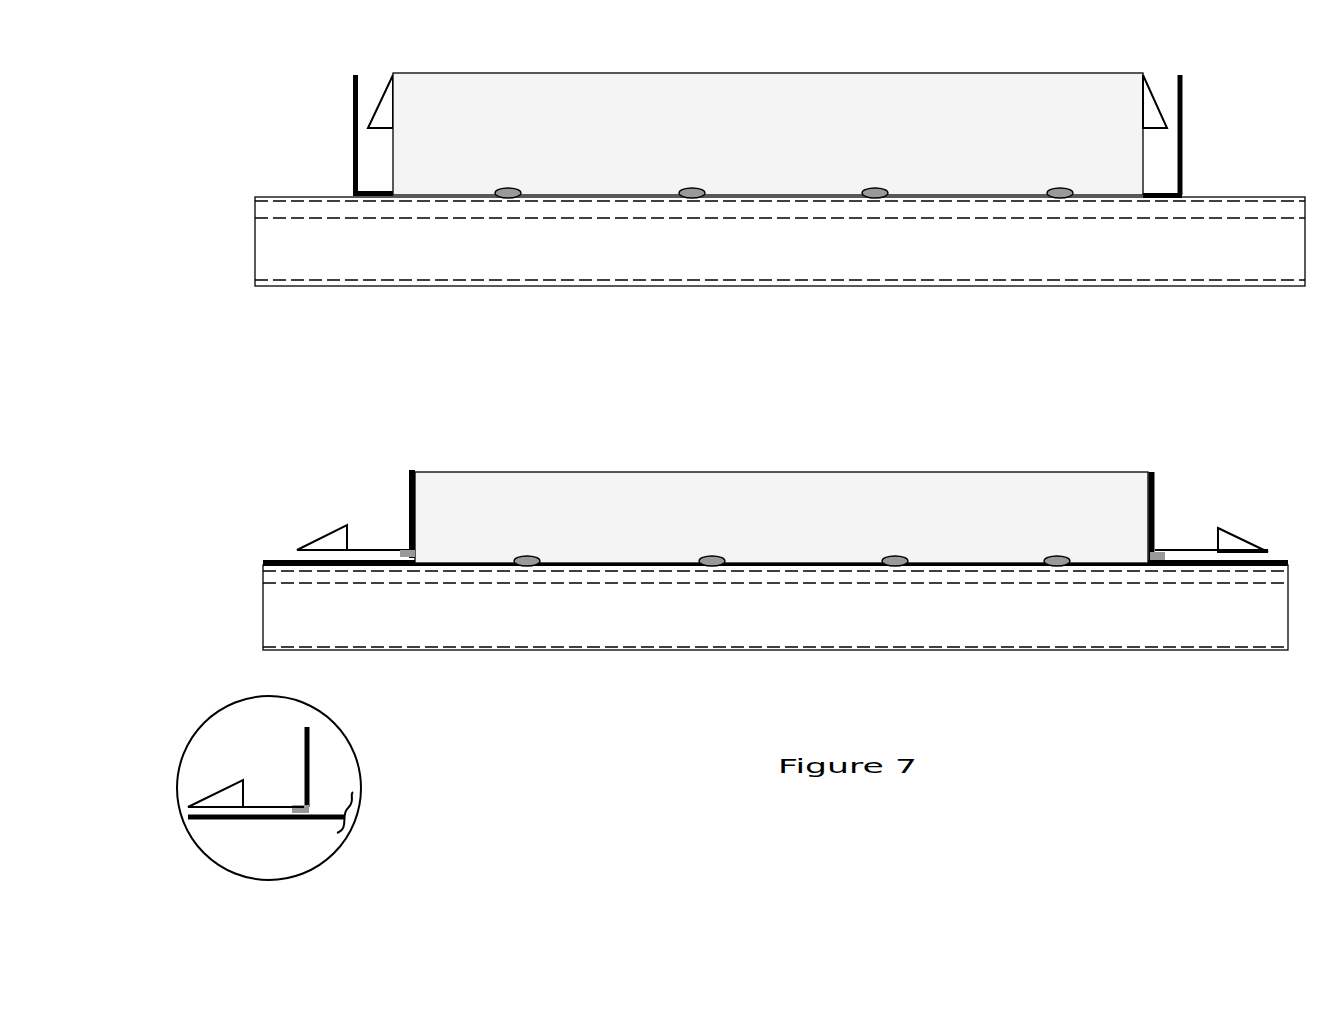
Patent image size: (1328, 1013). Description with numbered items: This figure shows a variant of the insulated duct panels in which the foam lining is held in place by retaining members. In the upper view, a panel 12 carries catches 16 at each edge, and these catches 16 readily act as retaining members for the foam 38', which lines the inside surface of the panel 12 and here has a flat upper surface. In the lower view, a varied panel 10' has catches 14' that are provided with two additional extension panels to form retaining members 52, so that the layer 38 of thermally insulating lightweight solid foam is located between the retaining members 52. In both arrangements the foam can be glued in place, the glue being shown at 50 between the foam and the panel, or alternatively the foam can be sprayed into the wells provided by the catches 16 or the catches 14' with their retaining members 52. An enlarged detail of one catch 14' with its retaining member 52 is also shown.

The panel 12 is at (308, 163).
The catches 16 is at (1183, 146).
The foam 38' is at (768, 214).
The catches 14' is at (251, 637).
The retaining members 52 is at (406, 481).
The layer of thermally insulating foam 38 is at (781, 493).
The glue 50 is at (546, 549).
The panel 10' is at (787, 545).